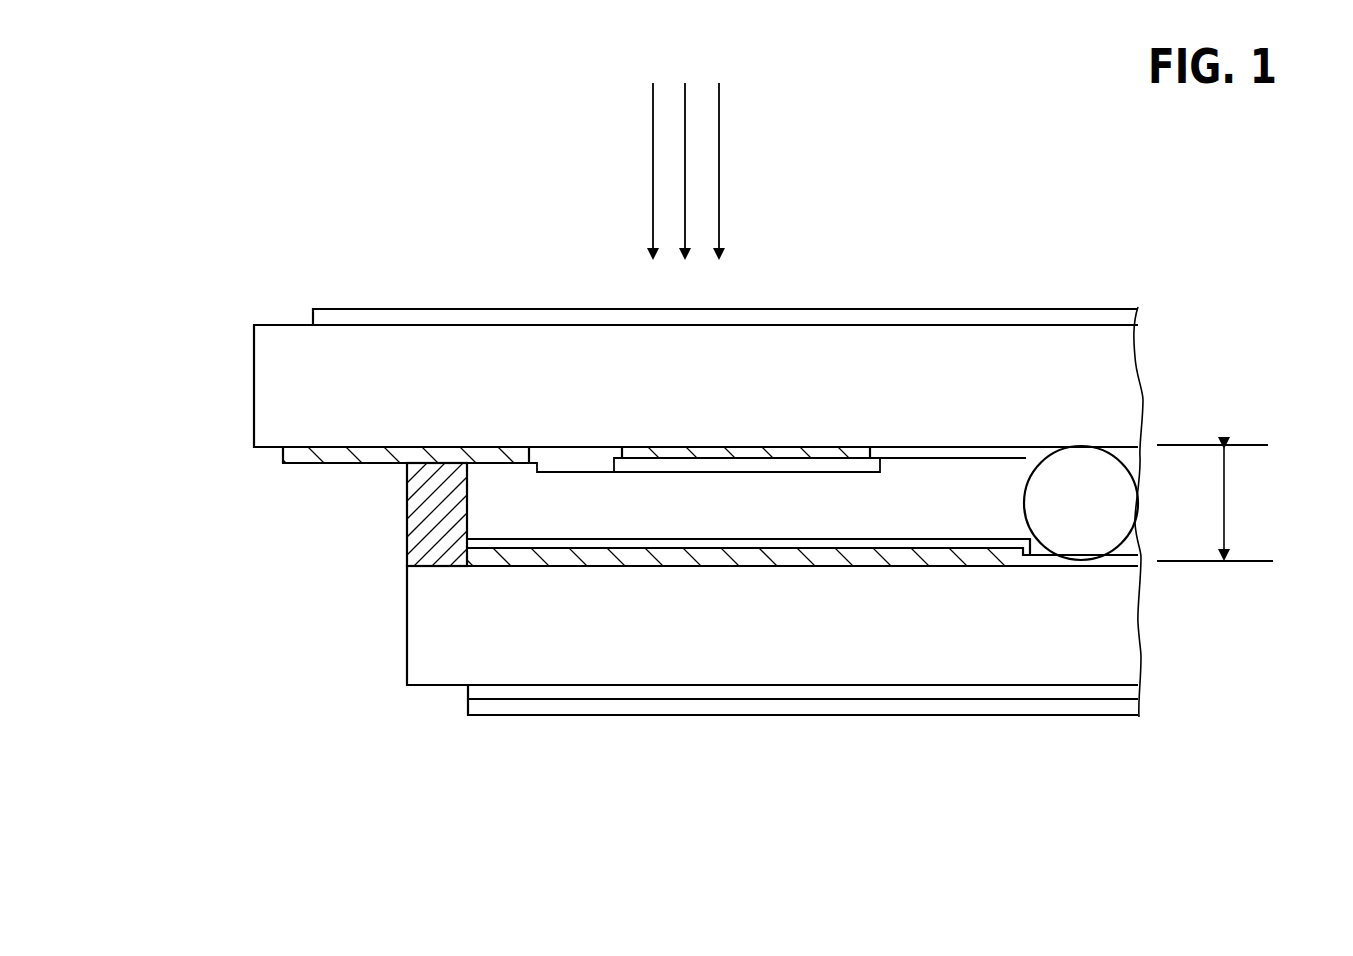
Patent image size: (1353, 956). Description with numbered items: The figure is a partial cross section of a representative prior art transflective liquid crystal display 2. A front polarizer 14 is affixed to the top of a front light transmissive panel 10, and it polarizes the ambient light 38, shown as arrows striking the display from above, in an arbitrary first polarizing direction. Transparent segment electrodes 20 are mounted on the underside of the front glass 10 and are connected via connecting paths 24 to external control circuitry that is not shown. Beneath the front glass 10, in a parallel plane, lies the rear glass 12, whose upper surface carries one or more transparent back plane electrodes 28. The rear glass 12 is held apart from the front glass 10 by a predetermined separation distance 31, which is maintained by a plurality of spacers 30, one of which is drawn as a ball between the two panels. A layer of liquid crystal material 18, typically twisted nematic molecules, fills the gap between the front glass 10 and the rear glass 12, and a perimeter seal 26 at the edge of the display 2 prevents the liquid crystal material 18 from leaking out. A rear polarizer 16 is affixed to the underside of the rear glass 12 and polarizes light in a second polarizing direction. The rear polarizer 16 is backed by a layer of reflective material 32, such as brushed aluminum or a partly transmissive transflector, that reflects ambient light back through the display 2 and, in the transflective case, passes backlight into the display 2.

The liquid crystal display 2 is at (305, 215).
The front light transmissive panel 10 is at (1010, 342).
The rear glass 12 is at (702, 668).
The front polarizer 14 is at (843, 308).
The rear polarizer 16 is at (998, 690).
The liquid crystal material 18 is at (576, 497).
The transparent segment electrodes 20 is at (808, 447).
The connecting paths 24 is at (307, 455).
The perimeter seal 26 is at (413, 513).
The transparent back plane electrodes 28 is at (507, 566).
The spacers 30 is at (1123, 502).
The separation distance 31 is at (1224, 493).
The reflective material 32 is at (797, 707).
The ambient light 38 is at (719, 152).